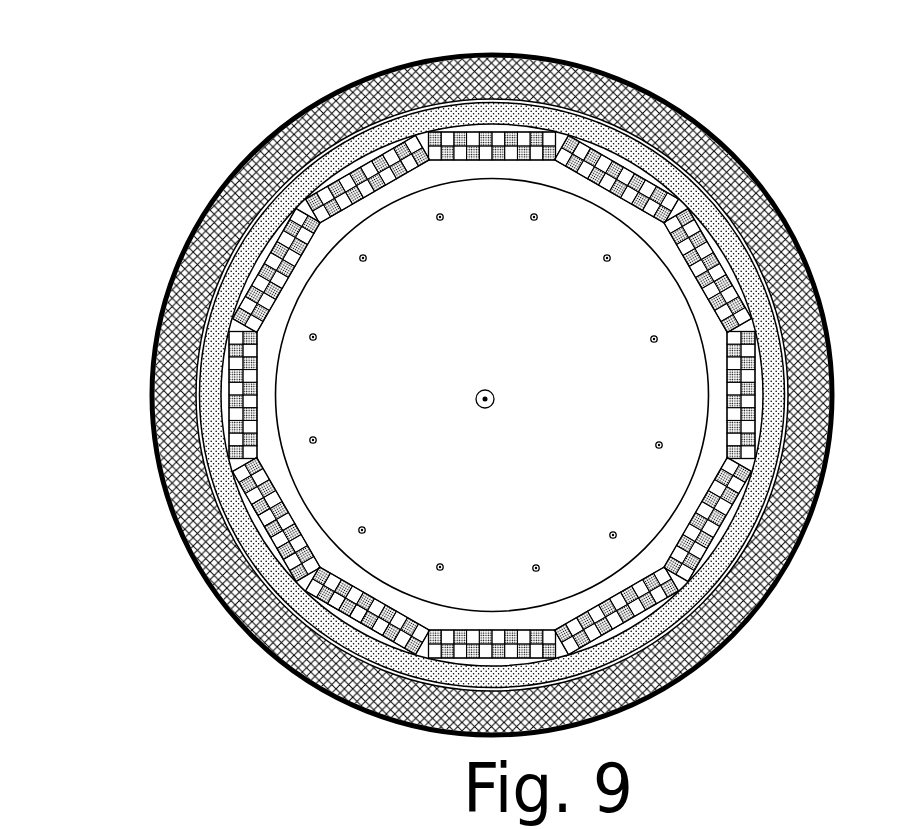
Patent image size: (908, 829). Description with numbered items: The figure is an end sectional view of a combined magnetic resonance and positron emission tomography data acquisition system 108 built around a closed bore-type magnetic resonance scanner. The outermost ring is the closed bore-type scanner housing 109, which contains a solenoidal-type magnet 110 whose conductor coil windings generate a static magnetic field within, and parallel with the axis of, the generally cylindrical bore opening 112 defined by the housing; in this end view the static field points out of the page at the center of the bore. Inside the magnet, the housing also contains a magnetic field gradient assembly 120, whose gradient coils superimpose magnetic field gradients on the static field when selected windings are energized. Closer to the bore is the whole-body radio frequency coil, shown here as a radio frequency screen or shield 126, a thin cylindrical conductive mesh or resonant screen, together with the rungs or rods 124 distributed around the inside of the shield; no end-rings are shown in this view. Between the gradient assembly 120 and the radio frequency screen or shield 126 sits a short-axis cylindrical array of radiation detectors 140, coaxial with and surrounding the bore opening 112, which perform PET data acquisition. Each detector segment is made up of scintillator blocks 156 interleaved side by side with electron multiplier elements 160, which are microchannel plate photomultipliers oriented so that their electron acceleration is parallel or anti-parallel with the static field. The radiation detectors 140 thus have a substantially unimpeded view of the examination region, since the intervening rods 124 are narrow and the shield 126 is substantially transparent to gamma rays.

The combined magnetic resonance and positron emission tomography data acquisition sy 108 is at (122, 97).
The closed bore-type scanner housing 109 is at (700, 122).
The solenoidal-type magnet 110 is at (772, 198).
The bore opening 112 is at (476, 344).
The magnetic field gradient assembly 120 is at (758, 290).
The rungs or rods 124 is at (650, 338).
The radio frequency screen or shield 126 is at (500, 180).
The radiation detectors 140 is at (717, 426).
The scintillator blocks 156 is at (387, 613).
The electron multiplier elements 160 is at (312, 553).